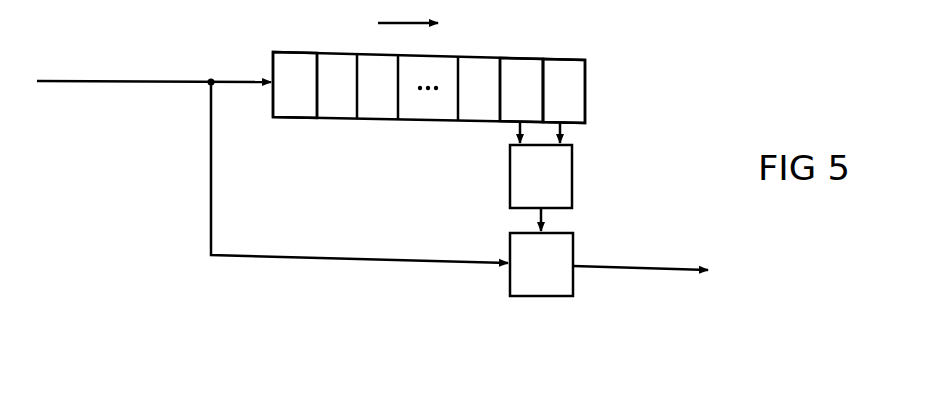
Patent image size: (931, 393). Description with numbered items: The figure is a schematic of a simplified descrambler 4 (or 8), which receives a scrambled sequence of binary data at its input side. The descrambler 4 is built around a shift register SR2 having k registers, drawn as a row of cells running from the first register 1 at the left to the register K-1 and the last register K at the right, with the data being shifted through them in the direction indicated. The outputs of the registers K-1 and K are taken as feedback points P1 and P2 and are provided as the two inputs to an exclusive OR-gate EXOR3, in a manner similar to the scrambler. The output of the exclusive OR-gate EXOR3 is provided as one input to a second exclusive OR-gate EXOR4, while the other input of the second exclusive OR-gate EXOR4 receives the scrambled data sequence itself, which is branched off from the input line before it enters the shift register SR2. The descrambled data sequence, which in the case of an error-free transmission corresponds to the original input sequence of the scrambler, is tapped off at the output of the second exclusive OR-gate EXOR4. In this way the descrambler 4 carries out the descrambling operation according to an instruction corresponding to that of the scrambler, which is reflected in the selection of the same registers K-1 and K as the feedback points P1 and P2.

The shift register SR2 is at (662, 111).
The descrambler 4 is at (472, 65).
The descrambler 8 is at (467, 65).
The register 1 is at (295, 60).
The register K-1 is at (519, 63).
The register K is at (562, 63).
The feedback point P1 is at (520, 133).
The feedback point P2 is at (565, 133).
The exclusive OR-gate EXOR3 is at (575, 190).
The second exclusive OR-gate EXOR4 is at (575, 280).